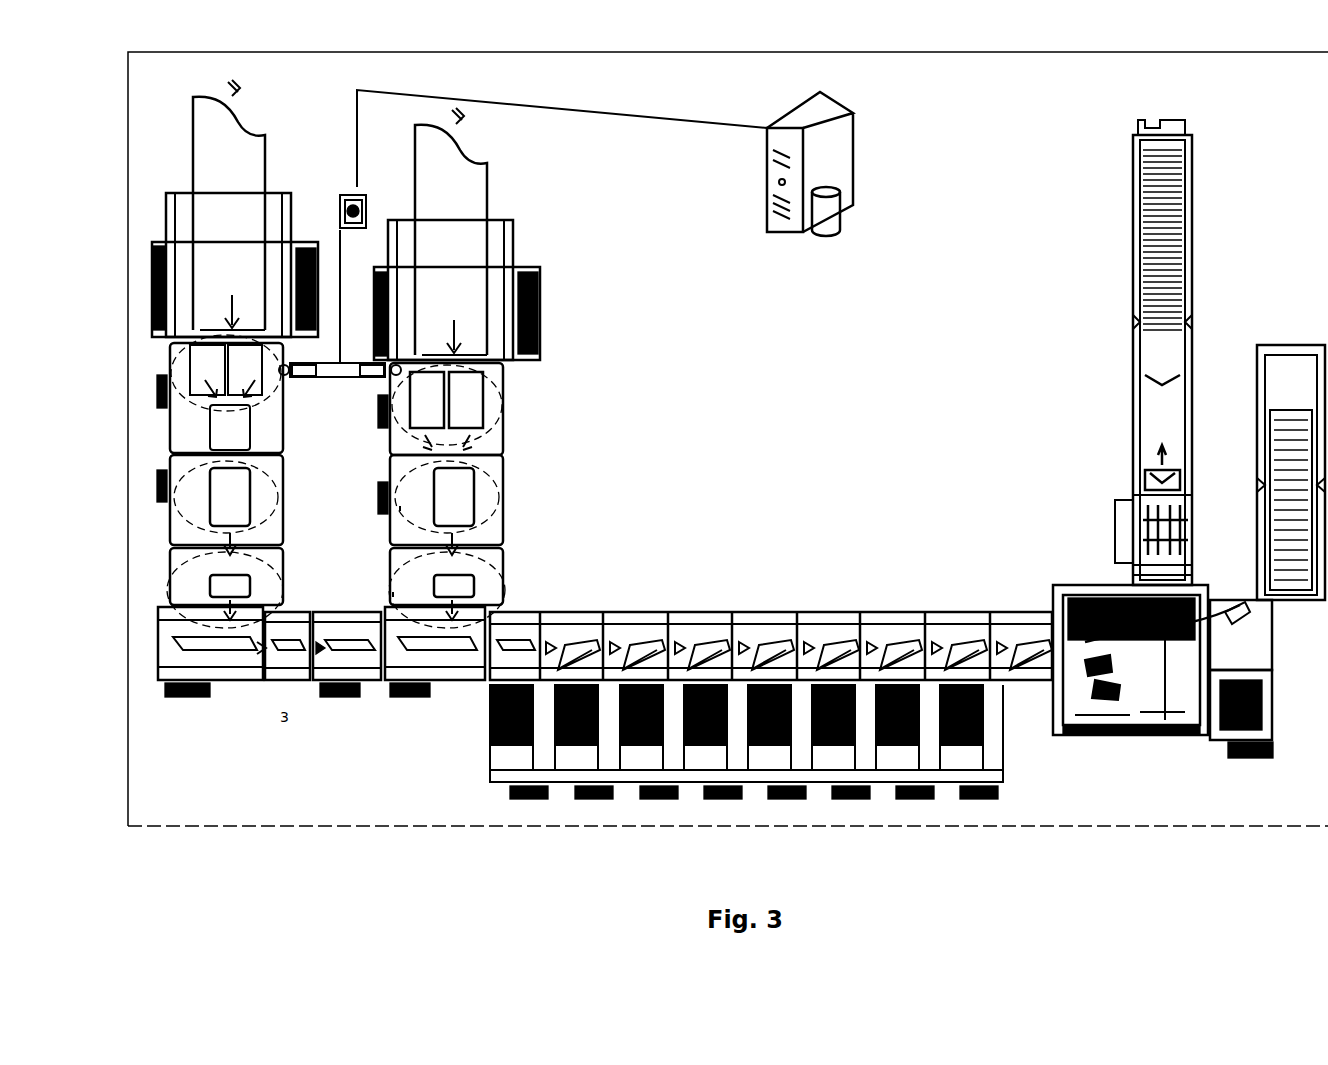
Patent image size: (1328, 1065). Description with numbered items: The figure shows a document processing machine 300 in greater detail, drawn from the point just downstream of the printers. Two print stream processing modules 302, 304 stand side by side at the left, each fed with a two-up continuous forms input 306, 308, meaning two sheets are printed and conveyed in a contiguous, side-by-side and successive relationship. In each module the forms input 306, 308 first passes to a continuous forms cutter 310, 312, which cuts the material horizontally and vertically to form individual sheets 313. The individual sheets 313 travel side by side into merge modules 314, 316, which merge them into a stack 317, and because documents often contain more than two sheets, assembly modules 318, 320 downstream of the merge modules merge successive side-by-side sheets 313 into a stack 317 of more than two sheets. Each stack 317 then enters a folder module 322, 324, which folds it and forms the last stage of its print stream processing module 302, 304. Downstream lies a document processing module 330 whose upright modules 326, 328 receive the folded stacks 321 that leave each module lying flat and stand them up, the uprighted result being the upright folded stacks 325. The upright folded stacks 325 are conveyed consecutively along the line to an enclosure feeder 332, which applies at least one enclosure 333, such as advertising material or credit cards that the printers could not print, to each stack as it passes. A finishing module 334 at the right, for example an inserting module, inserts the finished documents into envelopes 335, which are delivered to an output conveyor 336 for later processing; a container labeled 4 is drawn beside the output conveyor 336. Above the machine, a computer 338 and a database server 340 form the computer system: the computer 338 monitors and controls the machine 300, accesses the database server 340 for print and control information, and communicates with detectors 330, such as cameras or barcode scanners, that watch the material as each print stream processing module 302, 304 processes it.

The document processing machine 300 is at (228, 793).
The print stream processing module 302 is at (108, 297).
The print stream processing module 304 is at (580, 353).
The 2-up continuous forms input 306 is at (193, 153).
The 2-up continuous forms input 308 is at (495, 197).
The continuous forms cutter 310 is at (165, 226).
The continuous forms cutter 312 is at (541, 281).
The individual sheets 313 is at (390, 431).
The merge module 314 is at (143, 386).
The merge module 316 is at (510, 410).
The stack 317 is at (400, 508).
The assembly module 318 is at (143, 491).
The assembly module 320 is at (510, 495).
The folded stacks 321 is at (393, 594).
The folder module 322 is at (160, 584).
The folder module 324 is at (510, 576).
The upright folded stacks 325 is at (172, 647).
The upright module 326 is at (219, 700).
The upright module 328 is at (424, 703).
The document processing module 330 is at (350, 396).
The enclosure feeder 332 is at (490, 797).
The enclosure 333 is at (489, 736).
The finishing module 334 is at (1071, 566).
The envelopes 335 is at (1082, 738).
The output conveyor 336 is at (1100, 301).
The computer 338 is at (322, 137).
The database server 340 is at (795, 287).
The output container 4 is at (1291, 455).